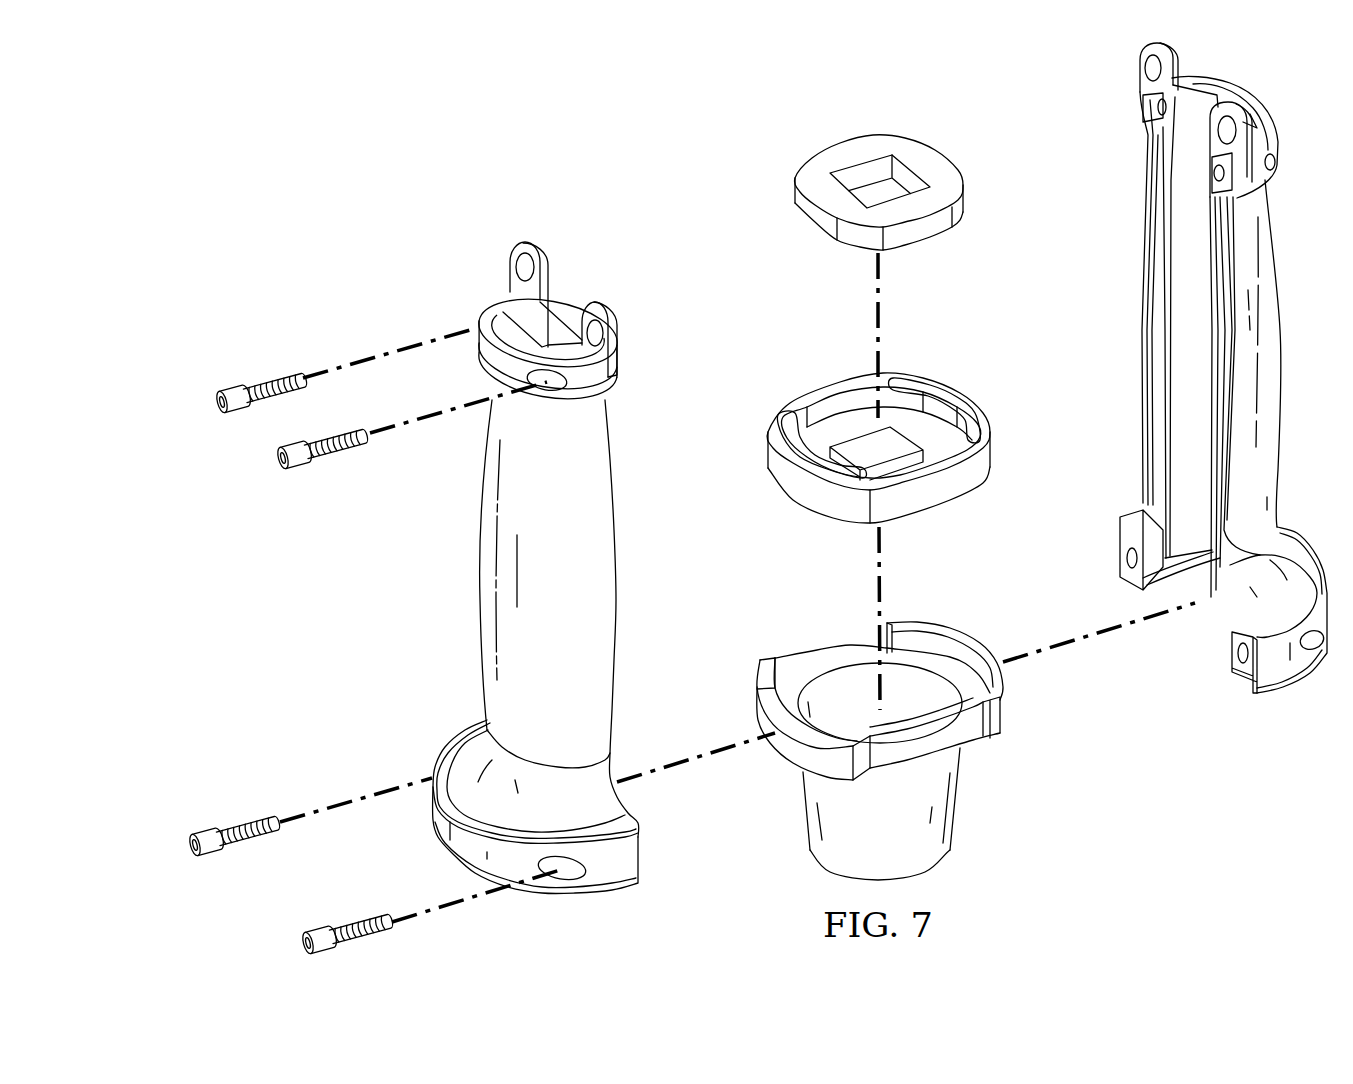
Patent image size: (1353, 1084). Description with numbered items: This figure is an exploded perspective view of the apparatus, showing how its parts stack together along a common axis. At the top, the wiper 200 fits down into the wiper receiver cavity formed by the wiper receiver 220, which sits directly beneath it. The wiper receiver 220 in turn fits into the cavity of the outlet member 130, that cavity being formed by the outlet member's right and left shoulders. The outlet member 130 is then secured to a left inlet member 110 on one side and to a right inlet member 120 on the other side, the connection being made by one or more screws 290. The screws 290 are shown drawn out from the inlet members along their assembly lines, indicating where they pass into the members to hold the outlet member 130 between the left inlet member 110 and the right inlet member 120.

The left inlet member 110 is at (479, 551).
The right inlet member 120 is at (1283, 361).
The outlet member 130 is at (1005, 707).
The wiper 200 is at (965, 198).
The wiper receiver 220 is at (995, 448).
The screws 290 is at (214, 406).